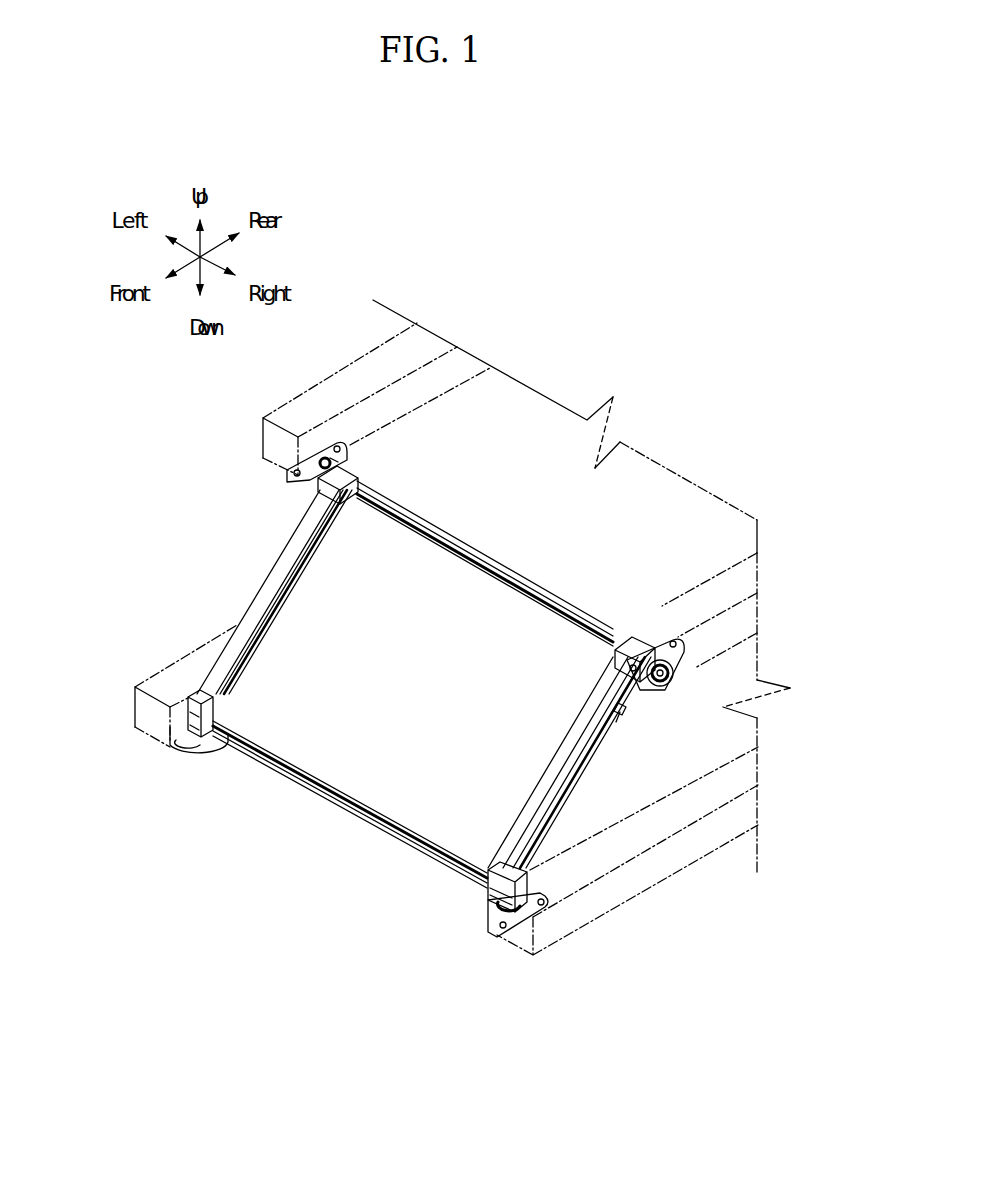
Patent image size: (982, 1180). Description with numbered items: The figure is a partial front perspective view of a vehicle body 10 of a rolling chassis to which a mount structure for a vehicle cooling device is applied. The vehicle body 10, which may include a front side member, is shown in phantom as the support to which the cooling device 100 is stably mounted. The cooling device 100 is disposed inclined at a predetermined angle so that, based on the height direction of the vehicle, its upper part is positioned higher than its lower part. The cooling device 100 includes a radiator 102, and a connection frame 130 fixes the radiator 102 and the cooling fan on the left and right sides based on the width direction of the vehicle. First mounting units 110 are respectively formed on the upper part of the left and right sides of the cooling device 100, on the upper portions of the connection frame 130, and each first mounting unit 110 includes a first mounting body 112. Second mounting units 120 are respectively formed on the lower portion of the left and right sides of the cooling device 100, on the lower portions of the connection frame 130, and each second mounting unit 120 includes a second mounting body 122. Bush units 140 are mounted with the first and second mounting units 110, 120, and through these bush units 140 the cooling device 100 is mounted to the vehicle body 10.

The vehicle body 10 is at (263, 442).
The cooling device 100 is at (500, 549).
The radiator 102 is at (382, 806).
The first mounting unit 110 is at (363, 478).
The first mounting body 112 is at (340, 473).
The second mounting unit 120 is at (198, 686).
The second mounting body 122 is at (194, 712).
The connection frame 130 is at (276, 584).
The bush unit 140 is at (289, 478).